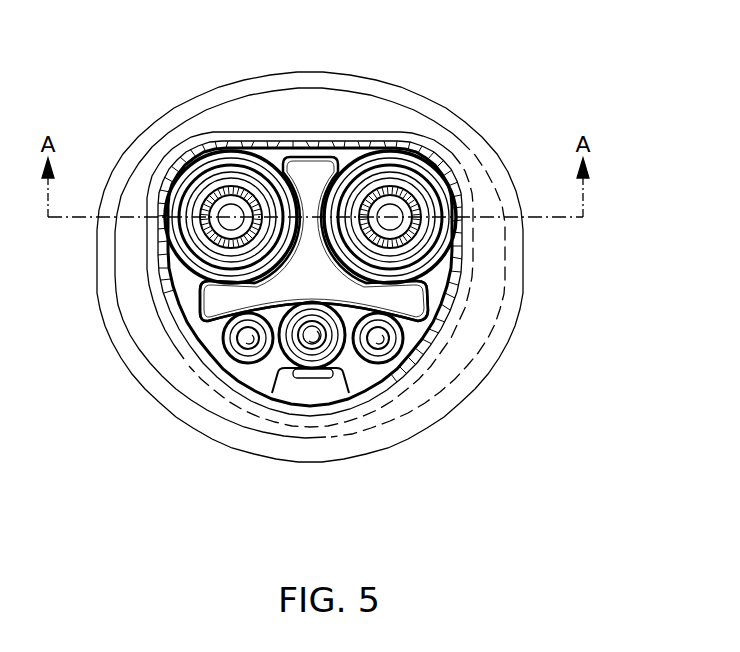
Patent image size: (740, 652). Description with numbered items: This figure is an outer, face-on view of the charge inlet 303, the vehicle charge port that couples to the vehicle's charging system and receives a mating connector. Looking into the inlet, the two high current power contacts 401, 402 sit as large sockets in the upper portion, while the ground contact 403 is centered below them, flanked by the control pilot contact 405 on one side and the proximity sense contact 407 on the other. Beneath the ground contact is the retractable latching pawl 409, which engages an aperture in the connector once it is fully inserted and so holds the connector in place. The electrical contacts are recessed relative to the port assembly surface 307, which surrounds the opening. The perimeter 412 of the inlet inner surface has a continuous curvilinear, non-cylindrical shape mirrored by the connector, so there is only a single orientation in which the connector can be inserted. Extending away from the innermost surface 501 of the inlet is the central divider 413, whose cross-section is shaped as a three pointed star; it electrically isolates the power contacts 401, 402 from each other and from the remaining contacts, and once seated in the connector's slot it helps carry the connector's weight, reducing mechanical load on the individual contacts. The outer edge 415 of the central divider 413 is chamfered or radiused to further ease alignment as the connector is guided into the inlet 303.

The charge inlet 303 is at (557, 103).
The port assembly surface 307 is at (152, 522).
The power contact 401 is at (231, 210).
The power contact 402 is at (390, 210).
The ground contact 403 is at (311, 337).
The control pilot contact 405 is at (246, 340).
The proximity sense contact 407 is at (379, 340).
The retractable latching pawl 409 is at (320, 380).
The perimeter 412 is at (474, 262).
The central divider 413 is at (312, 177).
The outer edge 415 is at (213, 292).
The innermost surface 501 is at (270, 162).